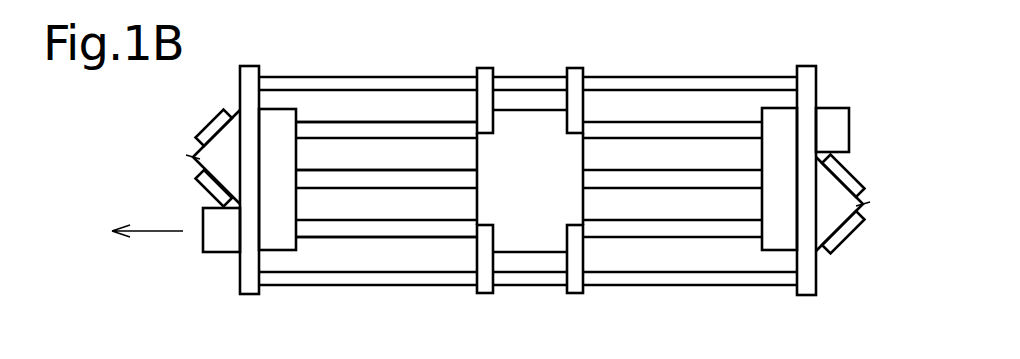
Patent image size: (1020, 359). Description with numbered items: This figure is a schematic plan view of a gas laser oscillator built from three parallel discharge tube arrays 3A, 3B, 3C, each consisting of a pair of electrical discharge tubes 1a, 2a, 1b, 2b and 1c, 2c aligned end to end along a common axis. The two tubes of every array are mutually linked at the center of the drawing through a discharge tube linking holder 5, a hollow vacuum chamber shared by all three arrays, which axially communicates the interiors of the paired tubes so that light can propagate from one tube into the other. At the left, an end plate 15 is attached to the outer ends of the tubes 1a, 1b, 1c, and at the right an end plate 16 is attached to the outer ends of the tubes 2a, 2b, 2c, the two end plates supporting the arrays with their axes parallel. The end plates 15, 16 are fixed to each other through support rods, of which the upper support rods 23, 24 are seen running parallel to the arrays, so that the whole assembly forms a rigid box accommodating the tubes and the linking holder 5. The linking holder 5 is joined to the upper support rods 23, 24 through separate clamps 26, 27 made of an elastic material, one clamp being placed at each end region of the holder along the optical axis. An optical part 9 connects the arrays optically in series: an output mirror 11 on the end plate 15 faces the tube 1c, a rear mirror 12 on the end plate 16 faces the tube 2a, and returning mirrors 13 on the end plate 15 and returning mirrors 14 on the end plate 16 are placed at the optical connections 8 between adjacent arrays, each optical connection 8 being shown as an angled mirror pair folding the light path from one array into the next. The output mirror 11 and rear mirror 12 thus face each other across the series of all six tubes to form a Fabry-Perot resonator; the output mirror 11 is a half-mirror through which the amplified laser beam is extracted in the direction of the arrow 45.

The electrical discharge tube 1a is at (365, 127).
The electrical discharge tube 1b is at (390, 175).
The electrical discharge tube 1c is at (390, 225).
The electrical discharge tube 2a is at (645, 127).
The electrical discharge tube 2b is at (680, 175).
The electrical discharge tube 2c is at (683, 225).
The discharge tube array 3A is at (445, 120).
The discharge tube array 3B is at (330, 169).
The discharge tube array 3C is at (338, 245).
The discharge tube linking holder 5 is at (532, 122).
The optical connection 8 is at (195, 155).
The optical part 9 is at (882, 123).
The output mirror 11 is at (225, 242).
The rear mirror 12 is at (840, 127).
The returning mirror 13 is at (213, 122).
The returning mirror 14 is at (851, 180).
The end plate 15 is at (252, 290).
The end plate 16 is at (808, 297).
The support rod 23 is at (712, 78).
The support rod 24 is at (740, 283).
The clamp 26 is at (487, 67).
The clamp 27 is at (482, 292).
The arrow 45 is at (158, 235).